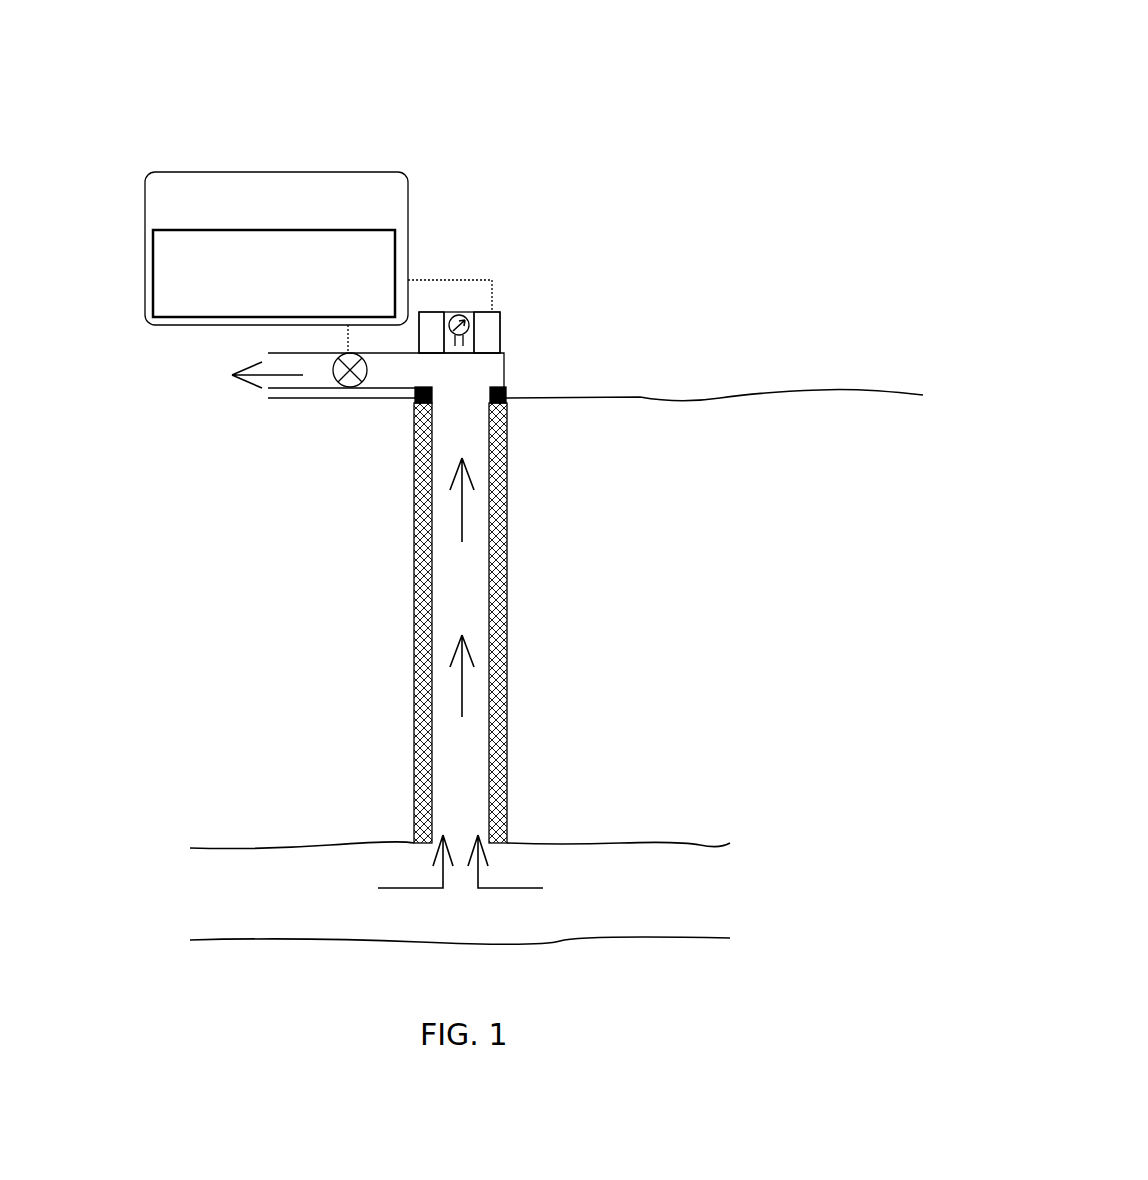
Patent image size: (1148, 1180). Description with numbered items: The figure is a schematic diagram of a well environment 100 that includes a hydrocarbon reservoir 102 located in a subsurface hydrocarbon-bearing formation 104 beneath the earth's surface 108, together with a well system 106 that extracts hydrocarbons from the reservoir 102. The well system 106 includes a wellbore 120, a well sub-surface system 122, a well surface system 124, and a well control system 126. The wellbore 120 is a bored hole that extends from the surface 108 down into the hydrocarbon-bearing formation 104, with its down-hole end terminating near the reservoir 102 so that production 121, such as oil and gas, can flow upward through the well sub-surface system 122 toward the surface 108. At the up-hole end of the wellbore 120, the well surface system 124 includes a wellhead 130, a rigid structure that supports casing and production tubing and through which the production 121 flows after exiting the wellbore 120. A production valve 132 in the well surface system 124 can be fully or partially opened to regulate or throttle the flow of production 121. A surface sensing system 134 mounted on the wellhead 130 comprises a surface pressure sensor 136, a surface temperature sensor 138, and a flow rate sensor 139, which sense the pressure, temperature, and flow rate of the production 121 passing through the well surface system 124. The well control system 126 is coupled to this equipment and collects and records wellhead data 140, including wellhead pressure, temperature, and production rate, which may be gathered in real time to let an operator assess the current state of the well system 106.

The well environment 100 is at (597, 43).
The hydrocarbon reservoir 102 is at (633, 911).
The hydrocarbon-bearing formation 104 is at (617, 701).
The well system 106 is at (227, 130).
The surface 108 is at (610, 401).
The wellbore 120 is at (507, 547).
The production 121 is at (189, 396).
The well sub-surface system 122 is at (387, 630).
The well surface system 124 is at (668, 220).
The well control system 126 is at (189, 225).
The wellhead 130 is at (508, 385).
The production valve 132 is at (345, 388).
The surface sensing system 134 is at (503, 325).
The surface pressure sensor 136 is at (460, 316).
The surface temperature sensor 138 is at (487, 312).
The flow rate sensor 139 is at (430, 312).
The wellhead data 140 is at (256, 295).